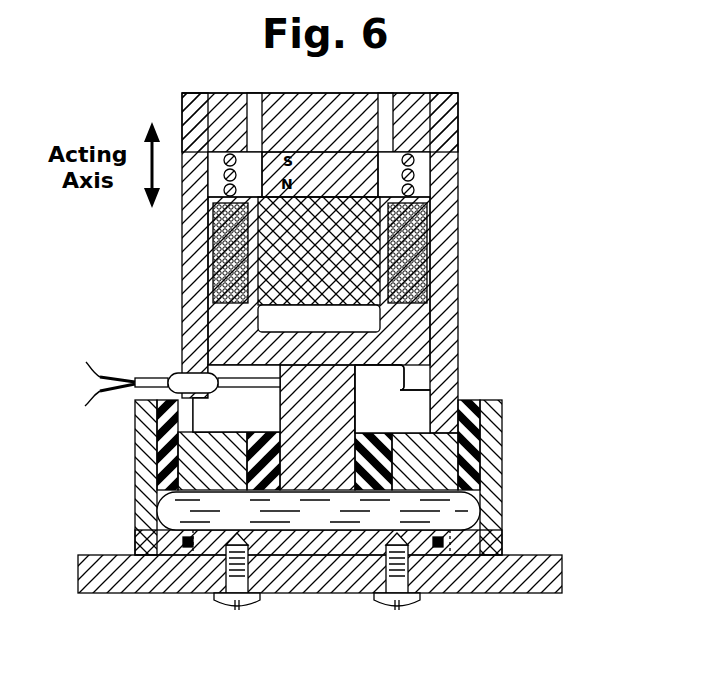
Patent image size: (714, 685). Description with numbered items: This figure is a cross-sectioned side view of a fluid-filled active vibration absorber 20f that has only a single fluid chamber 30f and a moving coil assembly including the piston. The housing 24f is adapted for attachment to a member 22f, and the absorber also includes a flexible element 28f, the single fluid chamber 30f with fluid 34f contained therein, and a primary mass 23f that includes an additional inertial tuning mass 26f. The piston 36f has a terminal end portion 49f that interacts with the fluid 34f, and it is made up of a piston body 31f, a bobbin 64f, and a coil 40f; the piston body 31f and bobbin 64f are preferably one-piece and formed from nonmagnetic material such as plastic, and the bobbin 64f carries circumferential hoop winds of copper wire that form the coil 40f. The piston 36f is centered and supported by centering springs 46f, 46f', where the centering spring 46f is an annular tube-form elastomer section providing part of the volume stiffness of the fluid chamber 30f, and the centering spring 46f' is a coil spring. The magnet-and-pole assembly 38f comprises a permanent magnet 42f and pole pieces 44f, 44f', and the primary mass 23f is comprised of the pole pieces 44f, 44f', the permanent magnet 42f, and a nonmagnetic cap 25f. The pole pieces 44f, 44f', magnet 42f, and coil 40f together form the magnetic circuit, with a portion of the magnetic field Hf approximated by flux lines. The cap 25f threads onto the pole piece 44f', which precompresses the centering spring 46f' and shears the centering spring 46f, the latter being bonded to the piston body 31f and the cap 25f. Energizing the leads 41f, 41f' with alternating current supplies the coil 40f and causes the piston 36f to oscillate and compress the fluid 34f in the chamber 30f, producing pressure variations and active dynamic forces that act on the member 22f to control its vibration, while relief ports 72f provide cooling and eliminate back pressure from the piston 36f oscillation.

The magnetic field Hf is at (182, 108).
The relief ports 72f is at (388, 93).
The additional inertial tuning mass 26f is at (464, 97).
The centering spring 46f' is at (396, 157).
The bobbin 64f is at (420, 206).
The coil 40f is at (430, 258).
The piston 36f is at (430, 280).
The fluid-filled AVA 20f is at (462, 323).
The centering spring 46f is at (386, 424).
The housing 24f is at (502, 428).
The nonmagnetic cap 25f is at (480, 467).
The terminal end portion 49f is at (502, 517).
The member 22f is at (300, 593).
The magnet-and-pole assembly 38f is at (180, 244).
The primary mass 23f is at (180, 290).
The piston body 31f is at (182, 345).
The energizing lead 41f' is at (76, 372).
The energizing lead 41f is at (151, 390).
The flexible element 28f is at (150, 450).
The fluid 34f is at (172, 535).
The fluid chamber 30f is at (318, 511).
The pole piece 44f' is at (320, 122).
The permanent magnet 42f is at (320, 174).
The pole piece 44f is at (319, 251).